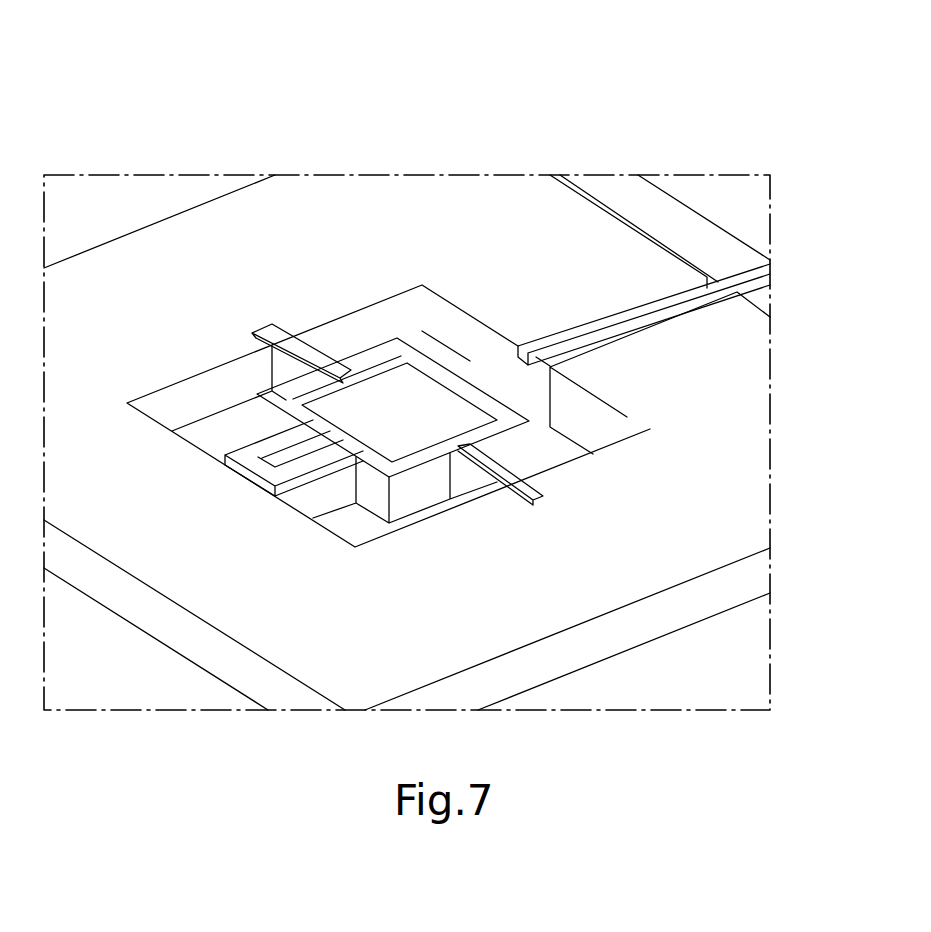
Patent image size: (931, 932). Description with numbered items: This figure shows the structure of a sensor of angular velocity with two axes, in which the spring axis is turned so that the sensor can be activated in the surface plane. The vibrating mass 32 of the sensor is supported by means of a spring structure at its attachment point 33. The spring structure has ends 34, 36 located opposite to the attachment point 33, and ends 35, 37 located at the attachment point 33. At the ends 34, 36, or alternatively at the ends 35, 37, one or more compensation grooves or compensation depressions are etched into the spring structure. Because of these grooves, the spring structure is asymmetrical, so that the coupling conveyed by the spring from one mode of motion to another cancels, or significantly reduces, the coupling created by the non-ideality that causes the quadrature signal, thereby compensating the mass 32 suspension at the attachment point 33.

The vibrating mass 32 is at (620, 220).
The attachment point 33 is at (550, 413).
The spring structure end 34 is at (262, 458).
The spring structure end 35 is at (432, 392).
The spring structure end 36 is at (532, 503).
The spring structure end 37 is at (338, 377).